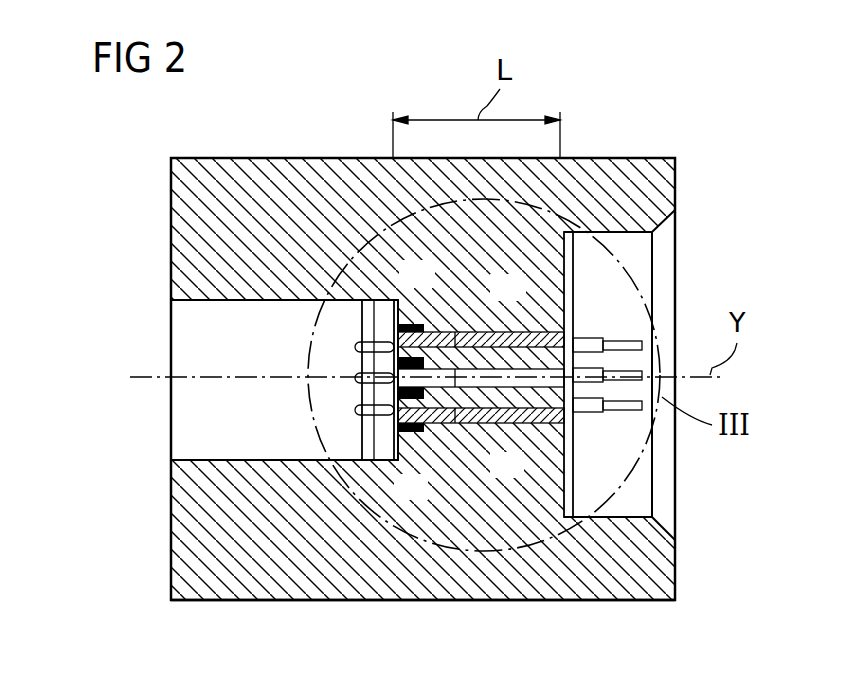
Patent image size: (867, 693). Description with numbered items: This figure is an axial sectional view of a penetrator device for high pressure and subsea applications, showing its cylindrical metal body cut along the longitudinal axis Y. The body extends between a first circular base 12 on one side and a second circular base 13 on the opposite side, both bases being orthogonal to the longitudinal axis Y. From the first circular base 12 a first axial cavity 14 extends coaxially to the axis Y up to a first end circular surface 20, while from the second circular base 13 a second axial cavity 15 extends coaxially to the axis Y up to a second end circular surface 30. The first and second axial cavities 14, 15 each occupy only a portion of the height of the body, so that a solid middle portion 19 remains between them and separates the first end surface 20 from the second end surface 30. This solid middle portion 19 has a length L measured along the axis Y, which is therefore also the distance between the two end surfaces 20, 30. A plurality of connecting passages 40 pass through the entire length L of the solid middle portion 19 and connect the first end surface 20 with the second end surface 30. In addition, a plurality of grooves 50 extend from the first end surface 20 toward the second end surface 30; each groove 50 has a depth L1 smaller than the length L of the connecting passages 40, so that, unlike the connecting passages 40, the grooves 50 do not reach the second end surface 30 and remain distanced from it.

The first circular base 12 is at (171, 213).
The second circular base 13 is at (675, 182).
The first axial cavity 14 is at (180, 343).
The second axial cavity 15 is at (638, 484).
The solid middle portion 19 is at (471, 468).
The first end circular surface 20 is at (362, 313).
The second end circular surface 30 is at (573, 272).
The connecting passages 40 is at (497, 332).
The grooves 50 is at (404, 322).